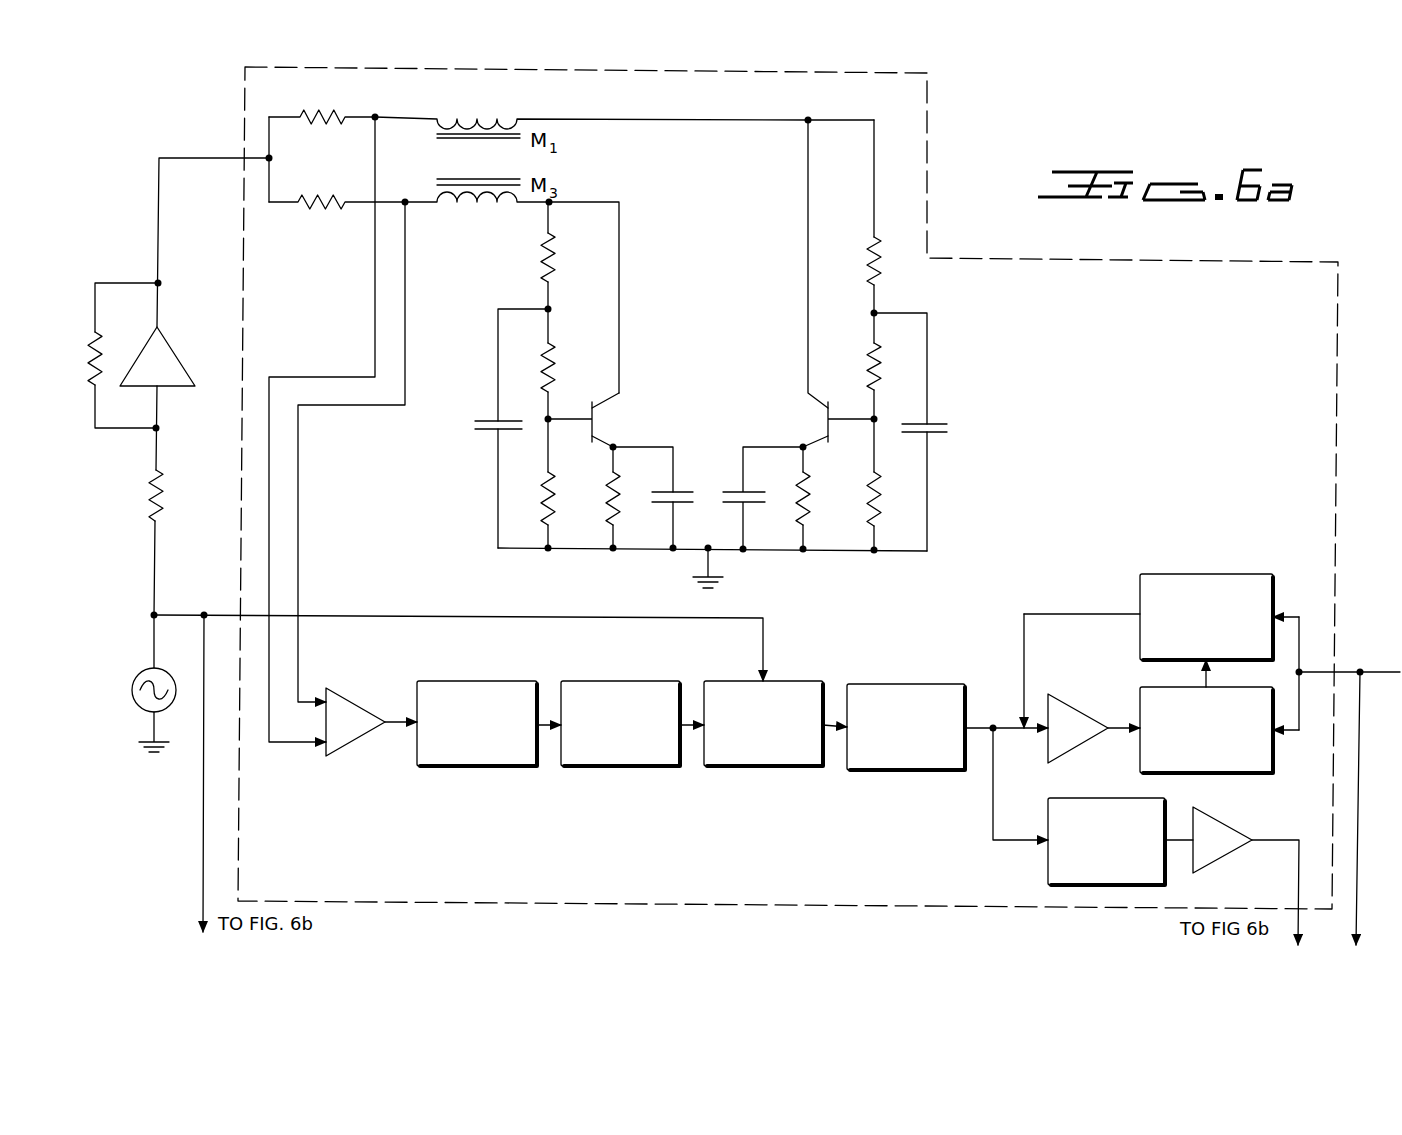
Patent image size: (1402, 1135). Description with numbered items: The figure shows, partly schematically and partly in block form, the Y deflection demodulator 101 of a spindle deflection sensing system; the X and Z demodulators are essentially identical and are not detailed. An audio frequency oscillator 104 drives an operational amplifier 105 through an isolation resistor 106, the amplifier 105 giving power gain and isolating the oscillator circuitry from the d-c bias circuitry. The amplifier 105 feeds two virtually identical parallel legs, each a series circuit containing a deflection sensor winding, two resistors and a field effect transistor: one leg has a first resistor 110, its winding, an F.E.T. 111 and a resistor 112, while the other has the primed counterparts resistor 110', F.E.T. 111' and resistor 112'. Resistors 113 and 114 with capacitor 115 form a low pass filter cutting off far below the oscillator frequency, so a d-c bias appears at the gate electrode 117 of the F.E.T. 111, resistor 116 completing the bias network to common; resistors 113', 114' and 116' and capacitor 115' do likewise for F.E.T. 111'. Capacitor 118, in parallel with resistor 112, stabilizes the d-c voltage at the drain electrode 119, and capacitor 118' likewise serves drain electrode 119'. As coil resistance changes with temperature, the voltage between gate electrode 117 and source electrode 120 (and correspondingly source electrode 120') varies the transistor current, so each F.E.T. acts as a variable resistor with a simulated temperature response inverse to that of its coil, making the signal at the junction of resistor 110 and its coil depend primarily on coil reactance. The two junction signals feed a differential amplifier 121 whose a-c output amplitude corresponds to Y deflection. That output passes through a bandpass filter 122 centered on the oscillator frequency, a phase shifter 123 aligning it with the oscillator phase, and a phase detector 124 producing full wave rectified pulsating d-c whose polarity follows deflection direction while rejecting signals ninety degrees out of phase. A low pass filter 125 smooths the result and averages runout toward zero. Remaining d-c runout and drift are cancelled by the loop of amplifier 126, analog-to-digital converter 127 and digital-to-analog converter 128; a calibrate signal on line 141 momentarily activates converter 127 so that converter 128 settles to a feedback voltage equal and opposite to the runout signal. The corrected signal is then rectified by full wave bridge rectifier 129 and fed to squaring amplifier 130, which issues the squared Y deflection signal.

The Y deflection demodulator 101 is at (930, 134).
The audio frequency oscillator 104 is at (137, 677).
The operational amplifier 105 is at (176, 362).
The isolation resistor 106 is at (164, 490).
The first resistor 110 is at (322, 101).
The resistor 110' is at (337, 186).
The F.E.T. 111 is at (830, 422).
The F.E.T. 111' is at (602, 418).
The resistor 112 is at (783, 498).
The resistor 112' is at (638, 497).
The resistor 113 is at (853, 216).
The resistor 113' is at (574, 255).
The resistor 114 is at (850, 366).
The resistor 114' is at (574, 364).
The capacitor 115 is at (946, 427).
The capacitor 115' is at (478, 421).
The resistor 116 is at (857, 484).
The resistor 116' is at (573, 483).
The gate electrode 117 is at (848, 414).
The capacitor 118 is at (751, 497).
The capacitor 118' is at (690, 511).
The drain electrode 119 is at (789, 434).
The drain electrode 119' is at (637, 433).
The source electrode 120 is at (796, 264).
The source electrode 120' is at (632, 390).
The differential amplifier 121 is at (356, 692).
The bandpass filter 122 is at (502, 681).
The phase shifter 123 is at (642, 681).
The phase detector 124 is at (798, 681).
The low pass filter 125 is at (904, 684).
The amplifier 126 is at (1075, 678).
The analog-to-digital converter 127 is at (1140, 694).
The digital-to-analog converter 128 is at (1230, 574).
The full wave bridge rectifier 129 is at (1117, 783).
The squaring amplifier 130 is at (1236, 826).
The line 141 is at (1362, 670).